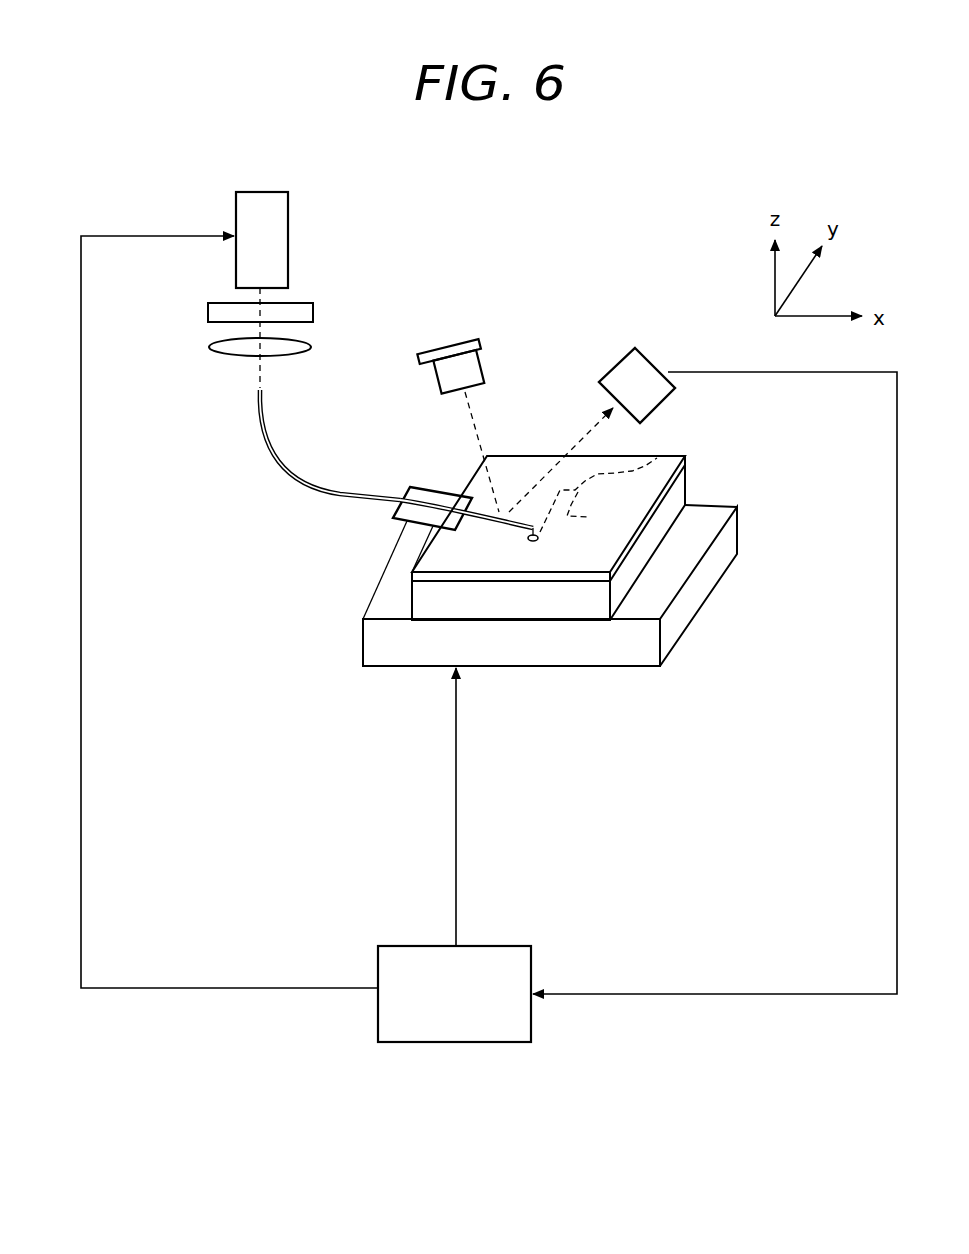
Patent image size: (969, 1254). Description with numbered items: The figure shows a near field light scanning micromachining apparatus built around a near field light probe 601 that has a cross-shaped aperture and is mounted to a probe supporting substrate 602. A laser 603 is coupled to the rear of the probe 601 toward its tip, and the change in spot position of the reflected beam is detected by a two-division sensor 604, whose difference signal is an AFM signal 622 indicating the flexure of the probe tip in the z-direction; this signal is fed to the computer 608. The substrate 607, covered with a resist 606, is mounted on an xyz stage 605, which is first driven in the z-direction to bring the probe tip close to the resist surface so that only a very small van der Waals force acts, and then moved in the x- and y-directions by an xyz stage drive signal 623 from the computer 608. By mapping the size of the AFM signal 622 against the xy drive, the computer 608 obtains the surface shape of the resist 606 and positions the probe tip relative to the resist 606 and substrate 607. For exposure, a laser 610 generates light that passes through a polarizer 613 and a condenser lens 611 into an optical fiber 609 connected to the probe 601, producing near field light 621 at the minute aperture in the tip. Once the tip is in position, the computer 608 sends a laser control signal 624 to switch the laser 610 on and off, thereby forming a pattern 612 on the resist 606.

The near field light probe 601 is at (513, 523).
The probe supporting substrate 602 is at (398, 524).
The laser 603 is at (460, 338).
The two-division sensor 604 is at (618, 355).
The xyz stage 605 is at (408, 650).
The resist 606 is at (687, 457).
The substrate 607 is at (650, 538).
The computer 608 is at (418, 945).
The optical fiber 609 is at (266, 444).
The laser 610 is at (290, 214).
The condenser lens 611 is at (312, 346).
The pattern 612 is at (641, 470).
The polarizer 613 is at (314, 311).
The near field light 621 is at (533, 542).
The AFM signal 622 is at (790, 990).
The xyz stage drive signal 623 is at (460, 780).
The laser control signal 624 is at (148, 987).